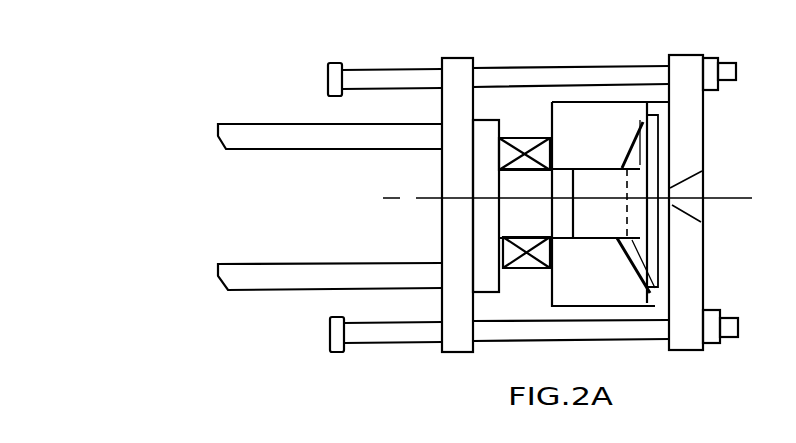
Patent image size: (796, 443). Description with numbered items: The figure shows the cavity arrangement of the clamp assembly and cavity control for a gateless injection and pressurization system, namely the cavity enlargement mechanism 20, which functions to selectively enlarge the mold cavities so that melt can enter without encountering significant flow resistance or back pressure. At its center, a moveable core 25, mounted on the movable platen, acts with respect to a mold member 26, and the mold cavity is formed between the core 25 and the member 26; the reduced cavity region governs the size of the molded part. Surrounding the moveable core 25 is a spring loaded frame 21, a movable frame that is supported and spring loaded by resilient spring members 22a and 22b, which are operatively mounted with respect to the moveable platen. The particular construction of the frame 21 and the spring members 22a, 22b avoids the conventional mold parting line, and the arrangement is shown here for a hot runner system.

The cavity enlargement mechanism 20 is at (88, 259).
The spring loaded frame 21 is at (566, 100).
The spring member 22a is at (520, 133).
The spring member 22b is at (533, 270).
The moveable core 25 is at (517, 215).
The mold member 26 is at (660, 252).